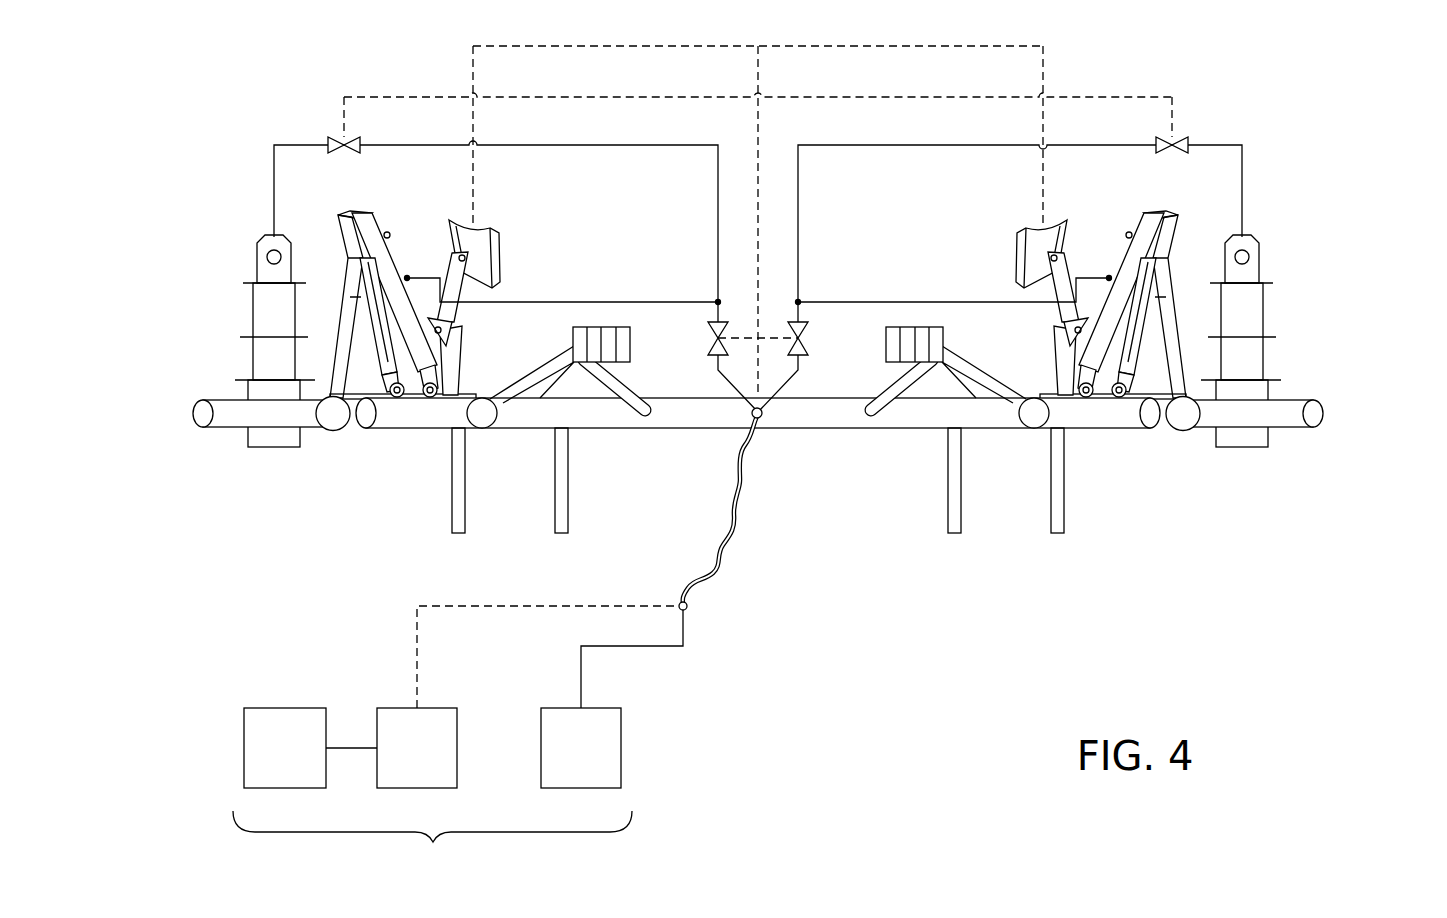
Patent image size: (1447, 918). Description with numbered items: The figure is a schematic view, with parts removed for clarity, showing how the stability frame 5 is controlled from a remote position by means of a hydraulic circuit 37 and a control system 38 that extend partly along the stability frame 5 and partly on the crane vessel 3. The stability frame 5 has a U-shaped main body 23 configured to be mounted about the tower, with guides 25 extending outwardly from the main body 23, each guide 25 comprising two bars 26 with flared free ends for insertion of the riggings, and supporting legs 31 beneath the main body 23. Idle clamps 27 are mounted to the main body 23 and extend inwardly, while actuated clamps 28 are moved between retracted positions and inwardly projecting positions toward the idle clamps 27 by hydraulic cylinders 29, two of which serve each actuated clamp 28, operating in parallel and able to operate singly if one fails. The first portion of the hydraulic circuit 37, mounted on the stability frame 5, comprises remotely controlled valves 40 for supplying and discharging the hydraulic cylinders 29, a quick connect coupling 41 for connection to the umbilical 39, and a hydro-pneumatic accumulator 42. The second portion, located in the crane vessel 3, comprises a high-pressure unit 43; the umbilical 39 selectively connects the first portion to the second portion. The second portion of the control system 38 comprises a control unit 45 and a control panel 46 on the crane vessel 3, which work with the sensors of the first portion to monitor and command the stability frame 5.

The crane vessel 3 is at (404, 855).
The stability frame 5 is at (1365, 350).
The main body 23 is at (826, 420).
The guide 25 is at (167, 438).
The bar 26 is at (229, 418).
The idle clamp 27 is at (573, 335).
The actuated clamp 28 is at (497, 246).
The hydraulic cylinder 29 is at (398, 248).
The supporting leg 31 is at (458, 518).
The hydraulic circuit 37 is at (760, 618).
The control system 38 is at (667, 577).
The umbilical 39 is at (735, 548).
The valve 40 is at (343, 136).
The quick connect coupling 41 is at (762, 420).
The hydro-pneumatic accumulator 42 is at (236, 316).
The high-pressure unit 43 is at (581, 748).
The control unit 45 is at (417, 748).
The control panel 46 is at (310, 748).